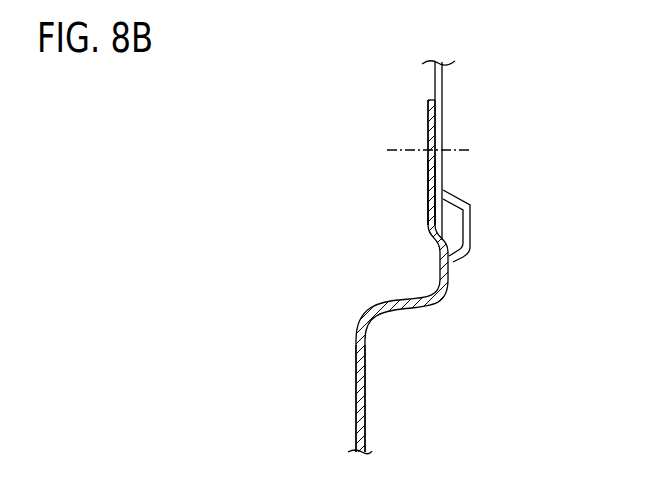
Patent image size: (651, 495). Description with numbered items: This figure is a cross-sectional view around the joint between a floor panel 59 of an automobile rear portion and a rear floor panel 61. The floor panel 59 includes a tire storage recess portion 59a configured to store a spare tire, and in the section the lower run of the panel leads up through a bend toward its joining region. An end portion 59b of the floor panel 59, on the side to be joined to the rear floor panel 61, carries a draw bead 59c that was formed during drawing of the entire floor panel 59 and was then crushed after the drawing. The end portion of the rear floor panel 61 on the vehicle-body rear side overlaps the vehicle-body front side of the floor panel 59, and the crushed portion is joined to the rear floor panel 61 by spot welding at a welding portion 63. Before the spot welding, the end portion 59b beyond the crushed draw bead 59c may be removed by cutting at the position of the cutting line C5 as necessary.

The floor panel 59 is at (366, 342).
The tire storage recess portion 59a is at (366, 400).
The end portion 59b is at (427, 131).
The draw bead 59c is at (473, 228).
The rear floor panel 61 is at (443, 100).
The welding portion 63 is at (429, 172).
The cutting line C5 is at (470, 151).